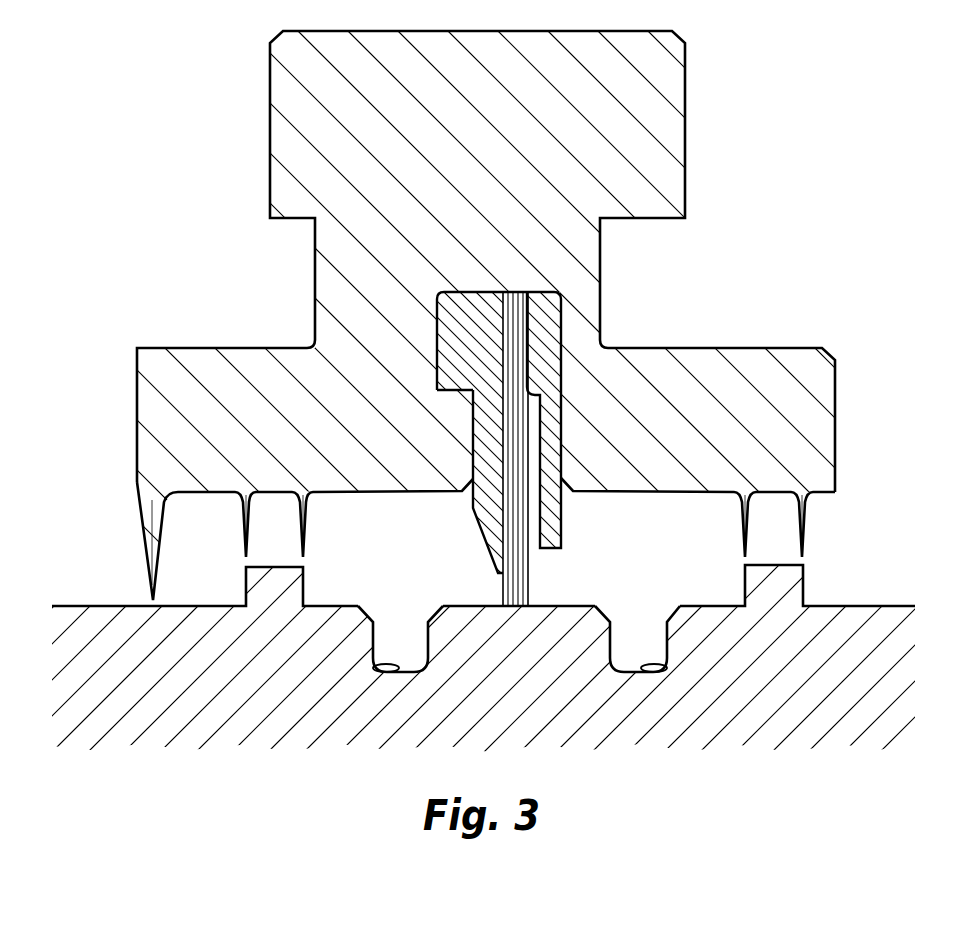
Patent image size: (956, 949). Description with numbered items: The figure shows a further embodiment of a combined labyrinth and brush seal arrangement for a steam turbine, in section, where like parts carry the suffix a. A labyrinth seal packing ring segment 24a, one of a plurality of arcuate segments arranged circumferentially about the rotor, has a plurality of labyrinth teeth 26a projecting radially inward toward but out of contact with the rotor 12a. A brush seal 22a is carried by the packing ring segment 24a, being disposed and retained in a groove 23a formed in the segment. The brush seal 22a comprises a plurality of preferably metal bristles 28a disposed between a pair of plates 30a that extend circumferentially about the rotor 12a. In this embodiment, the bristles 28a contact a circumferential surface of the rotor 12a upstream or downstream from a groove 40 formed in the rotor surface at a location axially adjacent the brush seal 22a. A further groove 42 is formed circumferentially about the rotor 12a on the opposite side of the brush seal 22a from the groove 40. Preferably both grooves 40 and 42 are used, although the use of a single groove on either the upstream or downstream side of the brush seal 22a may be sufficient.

The rotor 12a is at (110, 605).
The brush seal 22a is at (545, 338).
The groove 23a is at (557, 403).
The labyrinth seal packing ring segment 24a is at (325, 252).
The labyrinth teeth 26a is at (150, 525).
The bristles 28a is at (512, 468).
The plates 30a is at (470, 425).
The groove 40 is at (667, 668).
The groove 42 is at (372, 668).